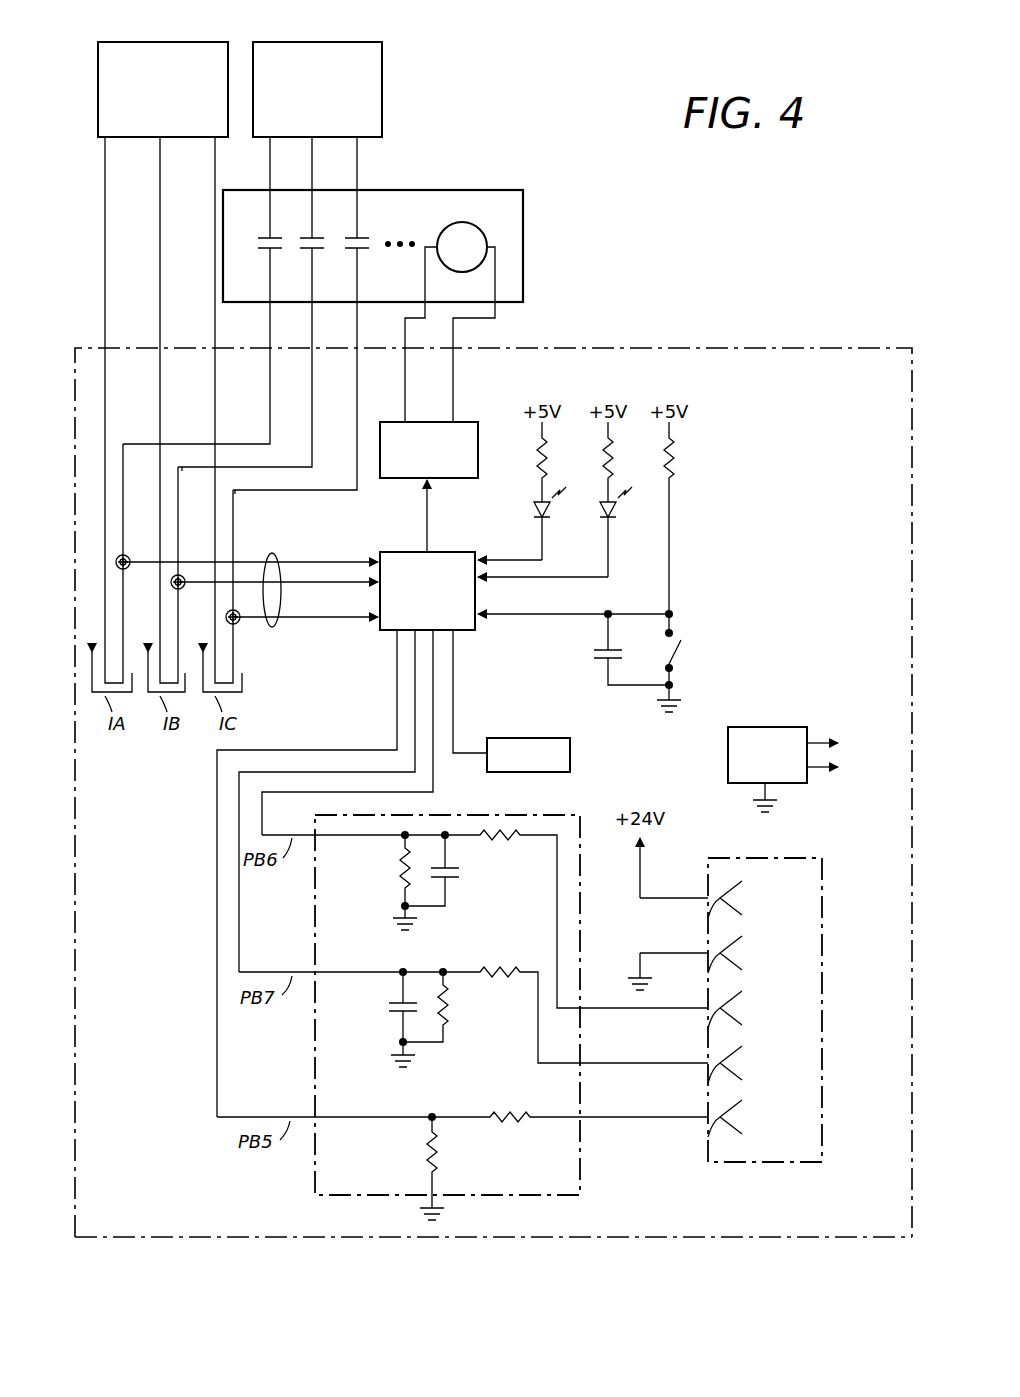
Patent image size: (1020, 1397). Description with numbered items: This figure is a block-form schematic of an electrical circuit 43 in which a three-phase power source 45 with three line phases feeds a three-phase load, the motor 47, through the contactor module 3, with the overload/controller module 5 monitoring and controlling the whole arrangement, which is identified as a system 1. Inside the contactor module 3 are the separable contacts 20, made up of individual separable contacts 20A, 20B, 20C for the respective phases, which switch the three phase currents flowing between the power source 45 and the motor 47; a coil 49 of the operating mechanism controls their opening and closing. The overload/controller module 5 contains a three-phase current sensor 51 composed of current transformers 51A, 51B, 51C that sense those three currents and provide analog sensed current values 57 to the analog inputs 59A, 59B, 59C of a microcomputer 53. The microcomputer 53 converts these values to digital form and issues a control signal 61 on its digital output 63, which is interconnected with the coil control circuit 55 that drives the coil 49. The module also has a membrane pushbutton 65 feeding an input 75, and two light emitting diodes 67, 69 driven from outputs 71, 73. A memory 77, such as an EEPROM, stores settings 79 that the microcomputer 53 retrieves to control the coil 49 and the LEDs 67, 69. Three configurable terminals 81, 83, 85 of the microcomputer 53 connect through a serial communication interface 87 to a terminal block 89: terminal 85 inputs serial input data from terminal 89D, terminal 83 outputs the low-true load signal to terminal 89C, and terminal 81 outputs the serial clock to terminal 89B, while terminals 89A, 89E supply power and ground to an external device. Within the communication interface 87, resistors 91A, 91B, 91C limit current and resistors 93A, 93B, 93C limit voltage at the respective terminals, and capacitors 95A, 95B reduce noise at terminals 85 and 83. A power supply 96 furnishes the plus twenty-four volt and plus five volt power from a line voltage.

The motor control system 1 is at (630, 252).
The contactor module 3 is at (523, 231).
The overload/controller module 5 is at (790, 348).
The separable contacts 20 is at (336, 225).
The separable contact 20A is at (266, 250).
The separable contact 20B is at (310, 236).
The separable contact 20C is at (362, 250).
The electrical circuit 43 is at (158, 1240).
The three-phase power source 45 is at (382, 63).
The motor 47 is at (183, 42).
The coil 49 is at (473, 226).
The three-phase current sensor 51 is at (166, 605).
The current transformer 51A is at (115, 568).
The current transformer 51B is at (185, 578).
The current transformer 51C is at (240, 625).
The microcomputer 53 is at (398, 550).
The coil control circuit 55 is at (394, 420).
The analog sensed current values 57 is at (274, 626).
The analog input 59A is at (378, 558).
The analog input 59B is at (378, 585).
The analog input 59C is at (378, 621).
The control signal 61 is at (426, 509).
The digital output 63 is at (430, 550).
The membrane pushbutton 65 is at (680, 648).
The light emitting diode 67 is at (534, 502).
The light emitting diode 69 is at (598, 512).
The output 71 is at (480, 556).
The output 73 is at (480, 582).
The input 75 is at (480, 623).
The memory 77 is at (520, 737).
The settings 79 is at (580, 752).
The PB5 terminal 81 is at (395, 634).
The PB7 terminal 83 is at (412, 636).
The terminal 85 is at (436, 636).
The communication interface 87 is at (314, 1174).
The terminal block 89 is at (729, 1030).
The terminal 89A is at (710, 886).
The terminal 89B is at (710, 1134).
The terminal 89C is at (710, 1079).
The terminal 89D is at (710, 1024).
The terminal 89E is at (710, 941).
The resistor 91A is at (490, 840).
The resistor 91B is at (505, 963).
The resistor 91C is at (512, 1110).
The resistor 93A is at (400, 878).
The resistor 93B is at (450, 1015).
The resistor 93C is at (442, 1150).
The capacitor 95A is at (462, 875).
The capacitor 95B is at (388, 1005).
The power supply 96 is at (778, 727).